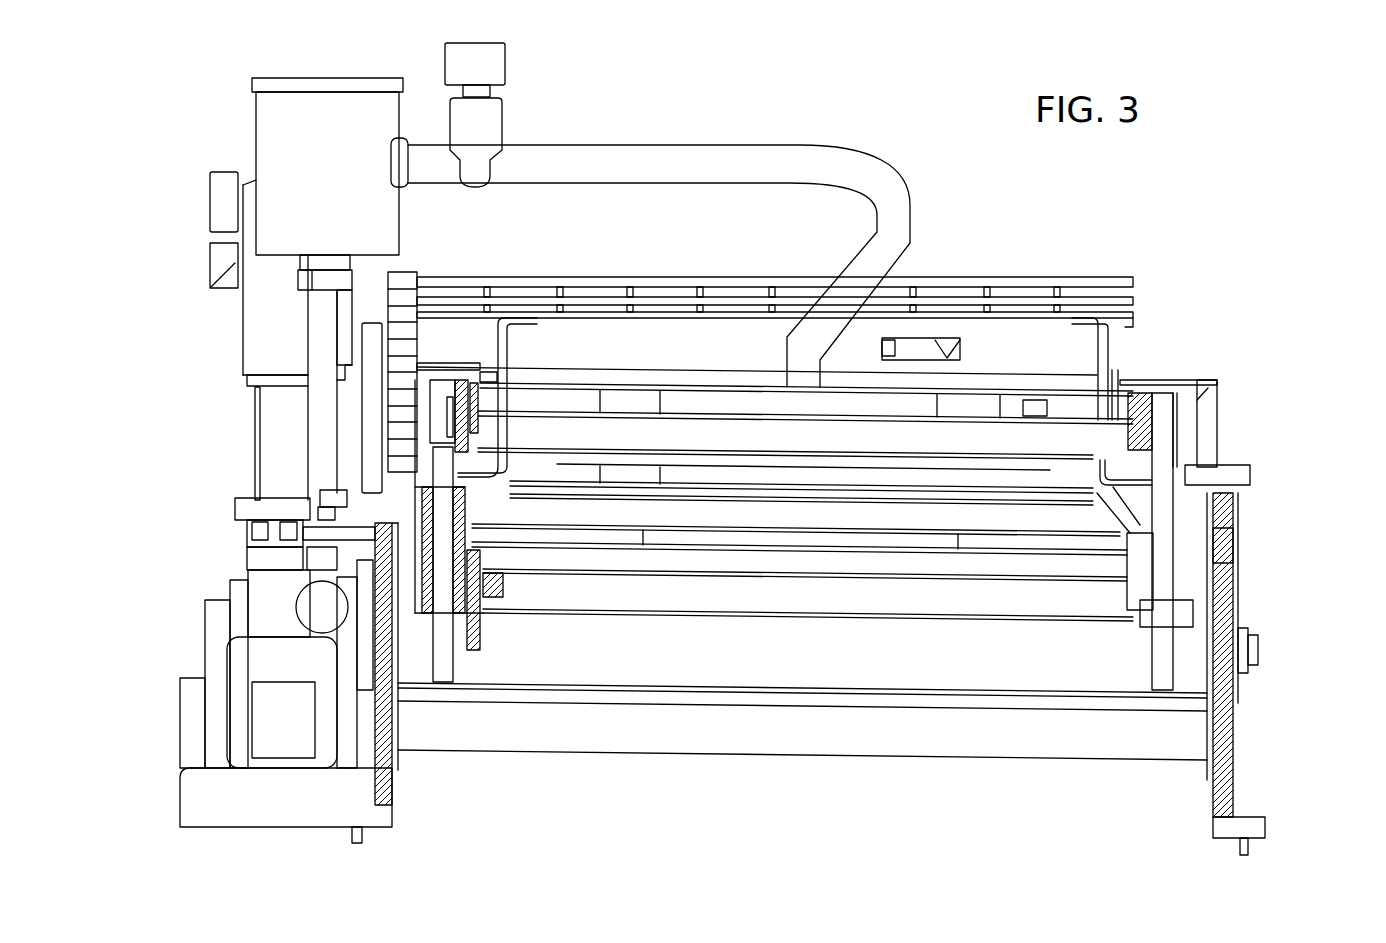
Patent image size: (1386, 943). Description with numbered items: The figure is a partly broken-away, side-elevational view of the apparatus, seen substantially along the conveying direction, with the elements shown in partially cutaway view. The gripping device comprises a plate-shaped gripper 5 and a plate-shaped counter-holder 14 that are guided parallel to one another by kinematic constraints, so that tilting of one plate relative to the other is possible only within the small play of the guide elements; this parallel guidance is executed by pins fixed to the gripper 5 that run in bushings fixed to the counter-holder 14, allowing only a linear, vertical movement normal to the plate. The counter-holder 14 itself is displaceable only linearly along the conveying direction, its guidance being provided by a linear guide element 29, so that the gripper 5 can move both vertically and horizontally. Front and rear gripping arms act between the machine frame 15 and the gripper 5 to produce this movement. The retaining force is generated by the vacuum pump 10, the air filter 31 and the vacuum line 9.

The gripper 5 is at (957, 447).
The vacuum line 9 is at (683, 170).
The vacuum pump 10 is at (260, 668).
The counter-holder 14 is at (737, 503).
The machine frame 15 is at (1240, 830).
The linear guide element 29 is at (350, 538).
The air filter 31 is at (285, 145).